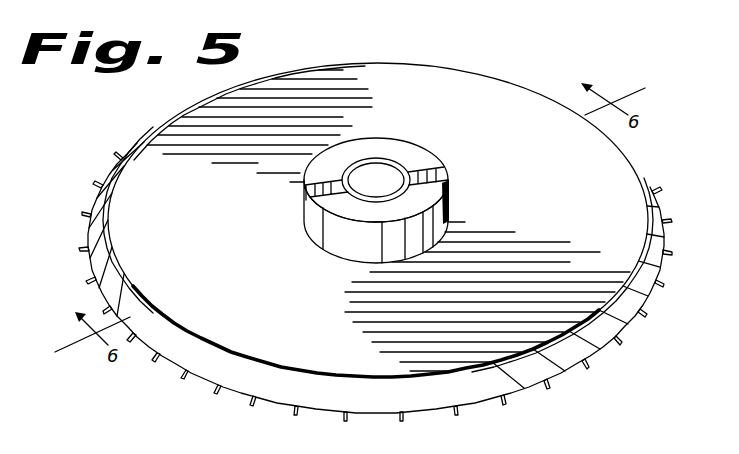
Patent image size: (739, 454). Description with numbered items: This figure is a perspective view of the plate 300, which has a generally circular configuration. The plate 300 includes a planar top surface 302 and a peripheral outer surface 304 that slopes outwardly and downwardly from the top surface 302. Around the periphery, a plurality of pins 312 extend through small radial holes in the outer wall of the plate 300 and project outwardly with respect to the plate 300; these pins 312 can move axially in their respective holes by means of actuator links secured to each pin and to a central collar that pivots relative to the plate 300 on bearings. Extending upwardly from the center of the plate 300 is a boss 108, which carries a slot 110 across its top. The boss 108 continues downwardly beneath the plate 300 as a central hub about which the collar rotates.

The plate 300 is at (526, 74).
The planar top surface 302 is at (613, 167).
The peripheral outer surface 304 is at (622, 322).
The pins 312 is at (229, 383).
The boss 108 is at (450, 206).
The slot 110 is at (306, 178).